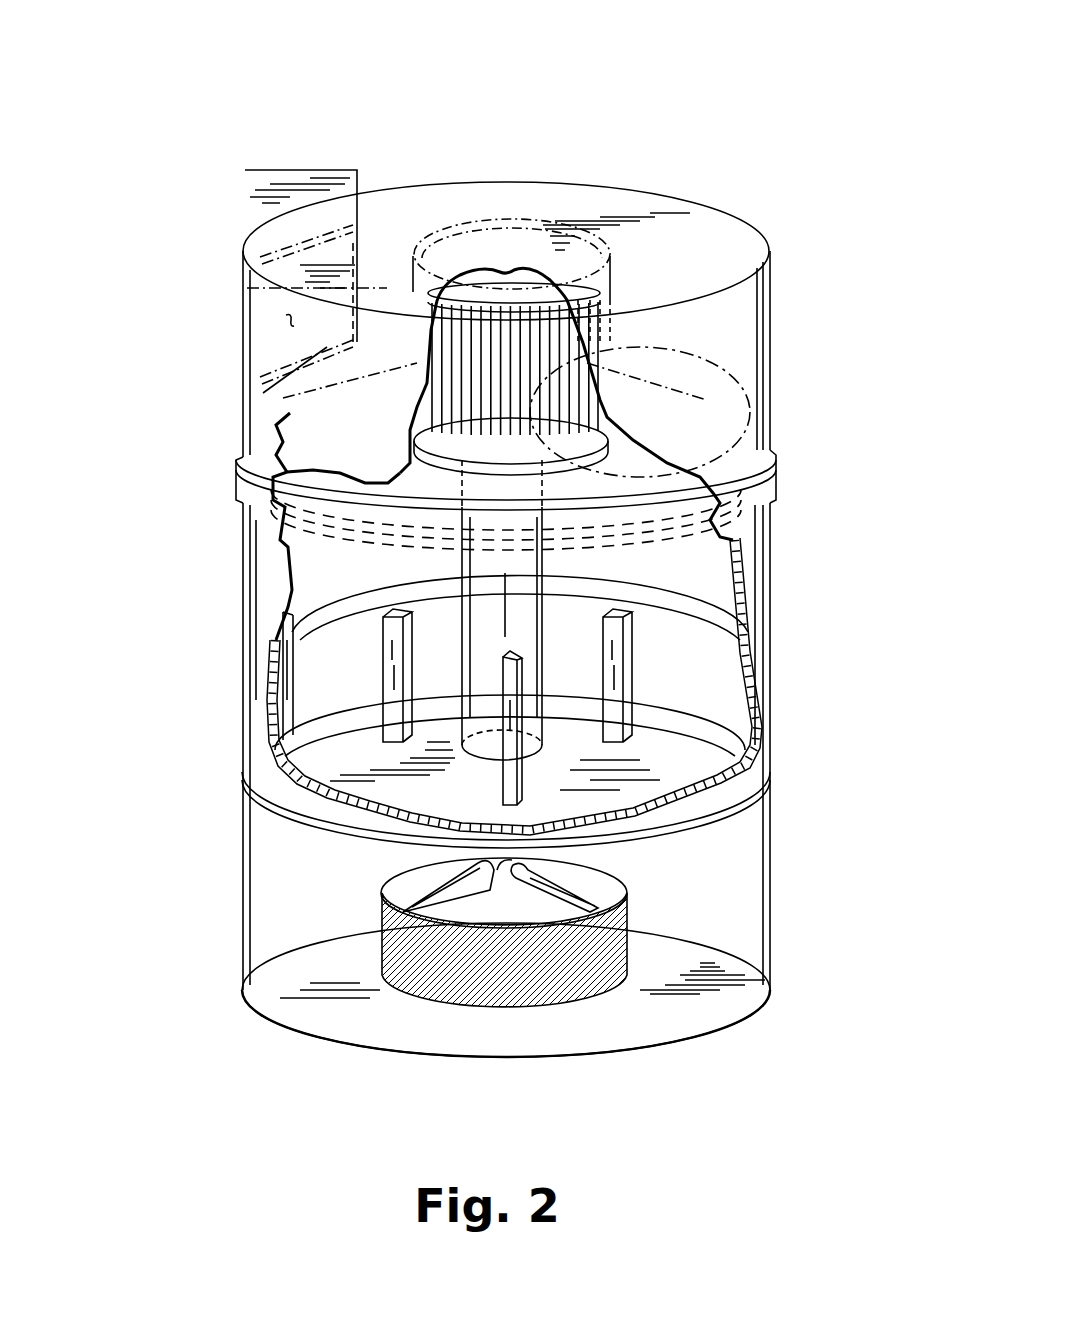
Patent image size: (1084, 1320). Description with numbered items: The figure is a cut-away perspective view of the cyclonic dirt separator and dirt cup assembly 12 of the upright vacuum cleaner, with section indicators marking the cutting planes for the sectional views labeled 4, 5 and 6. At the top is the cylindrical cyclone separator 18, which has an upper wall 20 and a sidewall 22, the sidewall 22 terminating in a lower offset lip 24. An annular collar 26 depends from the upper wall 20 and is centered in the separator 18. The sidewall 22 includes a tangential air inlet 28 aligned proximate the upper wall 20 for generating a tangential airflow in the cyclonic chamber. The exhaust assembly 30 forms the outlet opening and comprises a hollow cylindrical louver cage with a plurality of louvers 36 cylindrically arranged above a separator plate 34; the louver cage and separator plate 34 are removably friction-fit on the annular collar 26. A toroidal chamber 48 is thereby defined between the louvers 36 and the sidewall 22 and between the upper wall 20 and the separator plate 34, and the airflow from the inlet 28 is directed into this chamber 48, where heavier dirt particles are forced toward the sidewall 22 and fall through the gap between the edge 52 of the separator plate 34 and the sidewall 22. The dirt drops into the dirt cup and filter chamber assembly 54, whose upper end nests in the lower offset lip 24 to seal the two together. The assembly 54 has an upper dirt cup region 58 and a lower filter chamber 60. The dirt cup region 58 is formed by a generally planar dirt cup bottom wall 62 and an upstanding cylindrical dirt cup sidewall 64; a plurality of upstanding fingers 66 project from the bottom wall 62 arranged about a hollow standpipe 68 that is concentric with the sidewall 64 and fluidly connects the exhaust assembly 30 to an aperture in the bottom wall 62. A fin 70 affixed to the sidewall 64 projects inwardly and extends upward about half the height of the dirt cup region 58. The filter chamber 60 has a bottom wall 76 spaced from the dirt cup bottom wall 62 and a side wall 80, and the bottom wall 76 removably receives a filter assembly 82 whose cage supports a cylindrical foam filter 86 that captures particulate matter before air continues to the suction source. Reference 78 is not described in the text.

The section line 4- 4 is at (758, 53).
The section line 5- 5 is at (773, 318).
The section line 6- 6 is at (775, 580).
The cyclonic dirt separator and dirt cup assembly 12 is at (796, 117).
The cylindrical cyclone separator 18 is at (240, 343).
The upper wall 20 is at (717, 203).
The sidewall 22 is at (770, 293).
The lower offset lip 24 is at (772, 452).
The annular collar 26 is at (613, 267).
The tangential air inlet 28 is at (286, 315).
The exhaust assembly 30 is at (604, 355).
The separator plate 34 is at (674, 433).
The louvers 36 is at (465, 397).
The toroidal chamber 48 is at (647, 347).
The edge 52 is at (707, 475).
The dirt cup and filter chamber assembly 54 is at (123, 462).
The dirt cup region 58 is at (777, 542).
The filter chamber 60 is at (777, 840).
The dirt cup bottom wall 62 is at (717, 765).
The dirt cup sidewall 64 is at (762, 667).
The fingers 66 is at (570, 737).
The hollow standpipe 68 is at (520, 600).
The fin 70 is at (262, 668).
The bottom wall 76 is at (337, 1015).
The bottom wall rim 78 is at (400, 830).
The side wall 80 is at (772, 960).
The filter assembly 82 is at (517, 905).
The cylindrical foam filter 86 is at (427, 997).